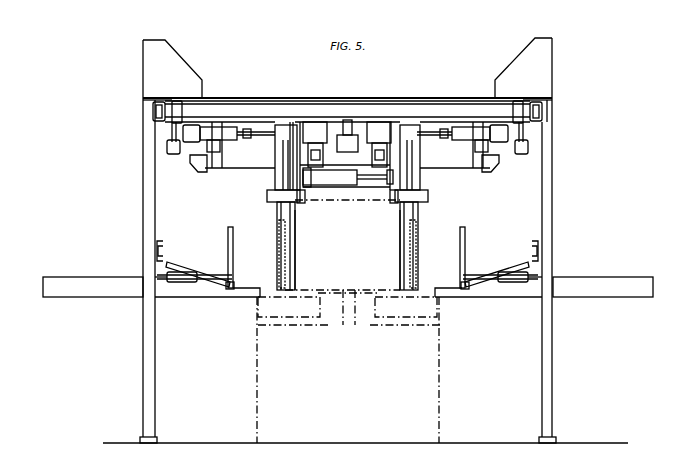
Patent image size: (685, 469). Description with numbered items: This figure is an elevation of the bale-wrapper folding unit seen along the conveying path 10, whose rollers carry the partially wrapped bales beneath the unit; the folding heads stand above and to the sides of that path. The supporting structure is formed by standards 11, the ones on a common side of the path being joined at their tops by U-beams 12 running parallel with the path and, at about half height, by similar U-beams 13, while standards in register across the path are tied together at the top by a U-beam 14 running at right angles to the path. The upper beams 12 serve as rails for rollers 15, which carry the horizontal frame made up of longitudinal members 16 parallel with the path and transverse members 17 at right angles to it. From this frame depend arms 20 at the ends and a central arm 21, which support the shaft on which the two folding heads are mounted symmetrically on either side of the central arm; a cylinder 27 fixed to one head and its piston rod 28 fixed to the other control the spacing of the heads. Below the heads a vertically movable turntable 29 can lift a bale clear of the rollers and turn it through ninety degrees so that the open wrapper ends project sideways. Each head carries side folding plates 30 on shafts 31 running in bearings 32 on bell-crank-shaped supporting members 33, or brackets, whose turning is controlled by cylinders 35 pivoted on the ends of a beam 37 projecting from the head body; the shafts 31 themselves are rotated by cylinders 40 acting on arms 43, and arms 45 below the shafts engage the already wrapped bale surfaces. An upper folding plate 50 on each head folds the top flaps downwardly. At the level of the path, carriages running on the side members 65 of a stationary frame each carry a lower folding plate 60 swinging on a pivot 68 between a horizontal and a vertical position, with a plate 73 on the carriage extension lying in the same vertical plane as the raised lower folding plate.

The conveying path 10 is at (289, 318).
The standards 11 is at (147, 377).
The U-beams 12 is at (163, 98).
The U-beams 13 is at (155, 249).
The U-beams 14 is at (255, 97).
The rollers 15 is at (155, 109).
The longitudinal members 16 is at (180, 103).
The transverse members 17 is at (408, 110).
The arms 20 is at (170, 126).
The arm 21 is at (348, 132).
The cylinder 27 is at (340, 180).
The piston rod 28 is at (370, 180).
The turntable 29 is at (352, 318).
The side folding plates 30 is at (277, 234).
The shaft 31 is at (283, 181).
The bearings 32 is at (270, 197).
The supporting member 33 is at (270, 170).
The cylinders 35 is at (315, 128).
The beam 37 is at (315, 175).
The cylinders 40 is at (224, 142).
The arms 43 is at (258, 137).
The arms 45 is at (295, 251).
The upper folding plate 50 is at (278, 266).
The lower folding plate 60 is at (172, 264).
The side members 65 is at (121, 291).
The pivot 68 is at (229, 291).
The plate 73 is at (229, 233).